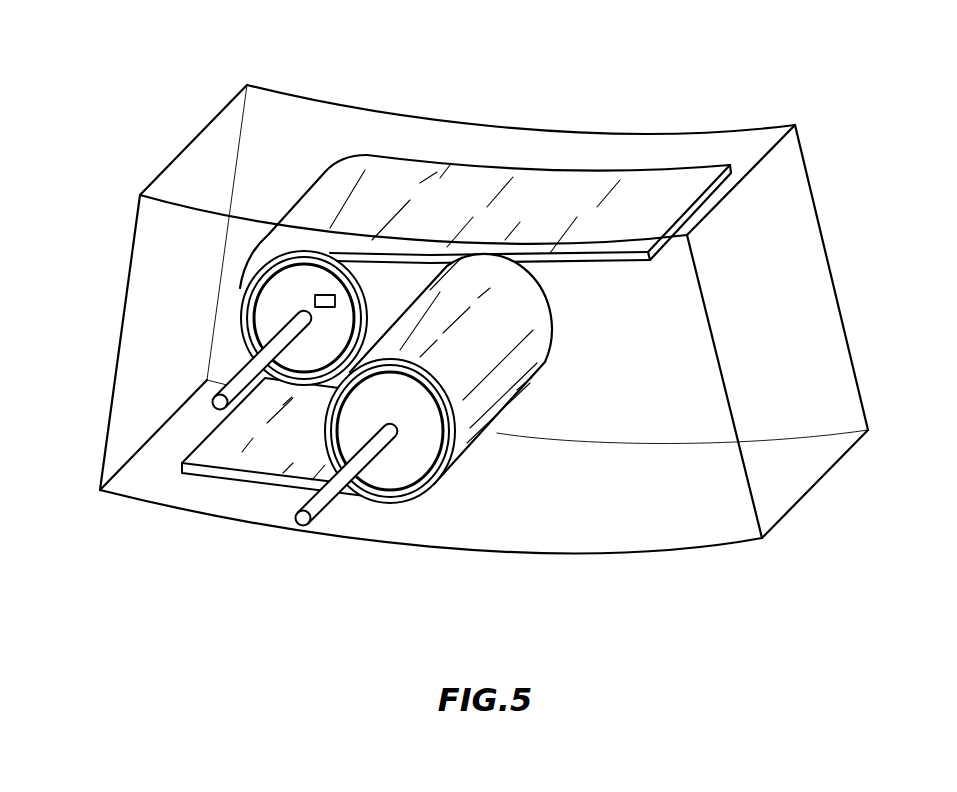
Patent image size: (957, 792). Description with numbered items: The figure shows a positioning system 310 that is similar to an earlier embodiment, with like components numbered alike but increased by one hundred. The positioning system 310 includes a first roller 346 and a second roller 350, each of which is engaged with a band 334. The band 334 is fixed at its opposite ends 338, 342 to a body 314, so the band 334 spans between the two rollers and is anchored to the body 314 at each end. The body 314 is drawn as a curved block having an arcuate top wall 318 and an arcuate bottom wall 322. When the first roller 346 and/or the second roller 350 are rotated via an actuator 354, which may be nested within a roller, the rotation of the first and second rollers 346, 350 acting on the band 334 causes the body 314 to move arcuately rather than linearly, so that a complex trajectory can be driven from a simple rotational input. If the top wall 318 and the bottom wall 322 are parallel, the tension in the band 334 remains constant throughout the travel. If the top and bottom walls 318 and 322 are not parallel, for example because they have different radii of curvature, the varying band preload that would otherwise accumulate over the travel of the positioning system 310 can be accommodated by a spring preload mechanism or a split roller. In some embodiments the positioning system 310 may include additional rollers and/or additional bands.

The positioning system 310 is at (117, 103).
The body 314 is at (342, 105).
The arcuate top wall 318 is at (395, 135).
The arcuate bottom wall 322 is at (665, 488).
The band 334 is at (640, 188).
The end of band 338 is at (668, 185).
The end of band 342 is at (252, 482).
The first roller 346 is at (282, 303).
The second roller 350 is at (404, 462).
The actuator 354 is at (315, 300).